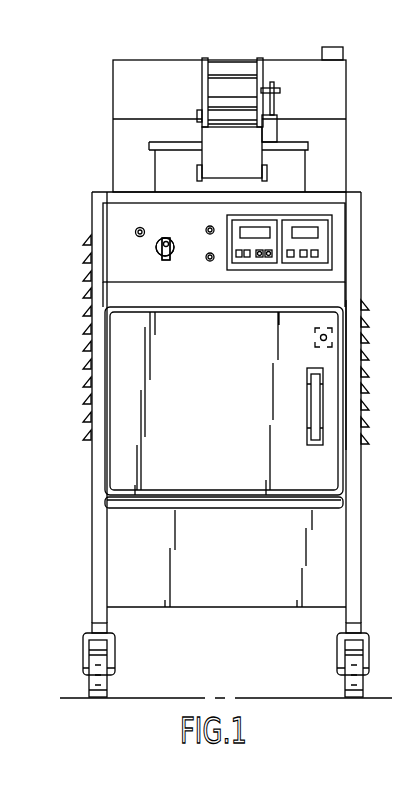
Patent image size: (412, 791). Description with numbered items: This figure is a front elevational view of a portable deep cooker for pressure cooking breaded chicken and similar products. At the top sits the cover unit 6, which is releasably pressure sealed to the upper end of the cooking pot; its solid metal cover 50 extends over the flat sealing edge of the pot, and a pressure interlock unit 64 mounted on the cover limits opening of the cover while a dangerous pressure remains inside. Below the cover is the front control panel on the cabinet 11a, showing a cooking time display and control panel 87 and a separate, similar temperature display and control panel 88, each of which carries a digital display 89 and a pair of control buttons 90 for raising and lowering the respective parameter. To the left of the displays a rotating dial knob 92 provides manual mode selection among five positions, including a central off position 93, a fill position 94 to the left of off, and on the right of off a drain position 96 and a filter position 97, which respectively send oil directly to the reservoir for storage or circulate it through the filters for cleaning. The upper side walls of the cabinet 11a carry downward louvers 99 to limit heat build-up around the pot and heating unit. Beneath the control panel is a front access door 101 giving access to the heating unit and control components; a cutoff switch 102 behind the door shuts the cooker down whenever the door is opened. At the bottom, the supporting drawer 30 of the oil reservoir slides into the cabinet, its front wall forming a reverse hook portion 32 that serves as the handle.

The cover unit 6 is at (180, 105).
The pressure interlock unit 64 is at (275, 112).
The solid metal cover 50 is at (309, 147).
The digital display 89 is at (310, 251).
The temperature display and control panel 88 is at (245, 272).
The control buttons 90 is at (268, 258).
The rotating dial knob 92 is at (163, 226).
The central off position 93 is at (178, 236).
The drain position 96 is at (188, 237).
The knob handle 94 is at (147, 258).
The filter position 97 is at (186, 254).
The cooking time display and control panel 87 is at (170, 276).
The downward louvers 99 is at (86, 393).
The cutoff switch 102 is at (345, 333).
The cabinet 11a is at (351, 366).
The front access door 101 is at (333, 460).
The reverse hook portion 32 is at (345, 503).
The supporting drawer 30 is at (328, 552).